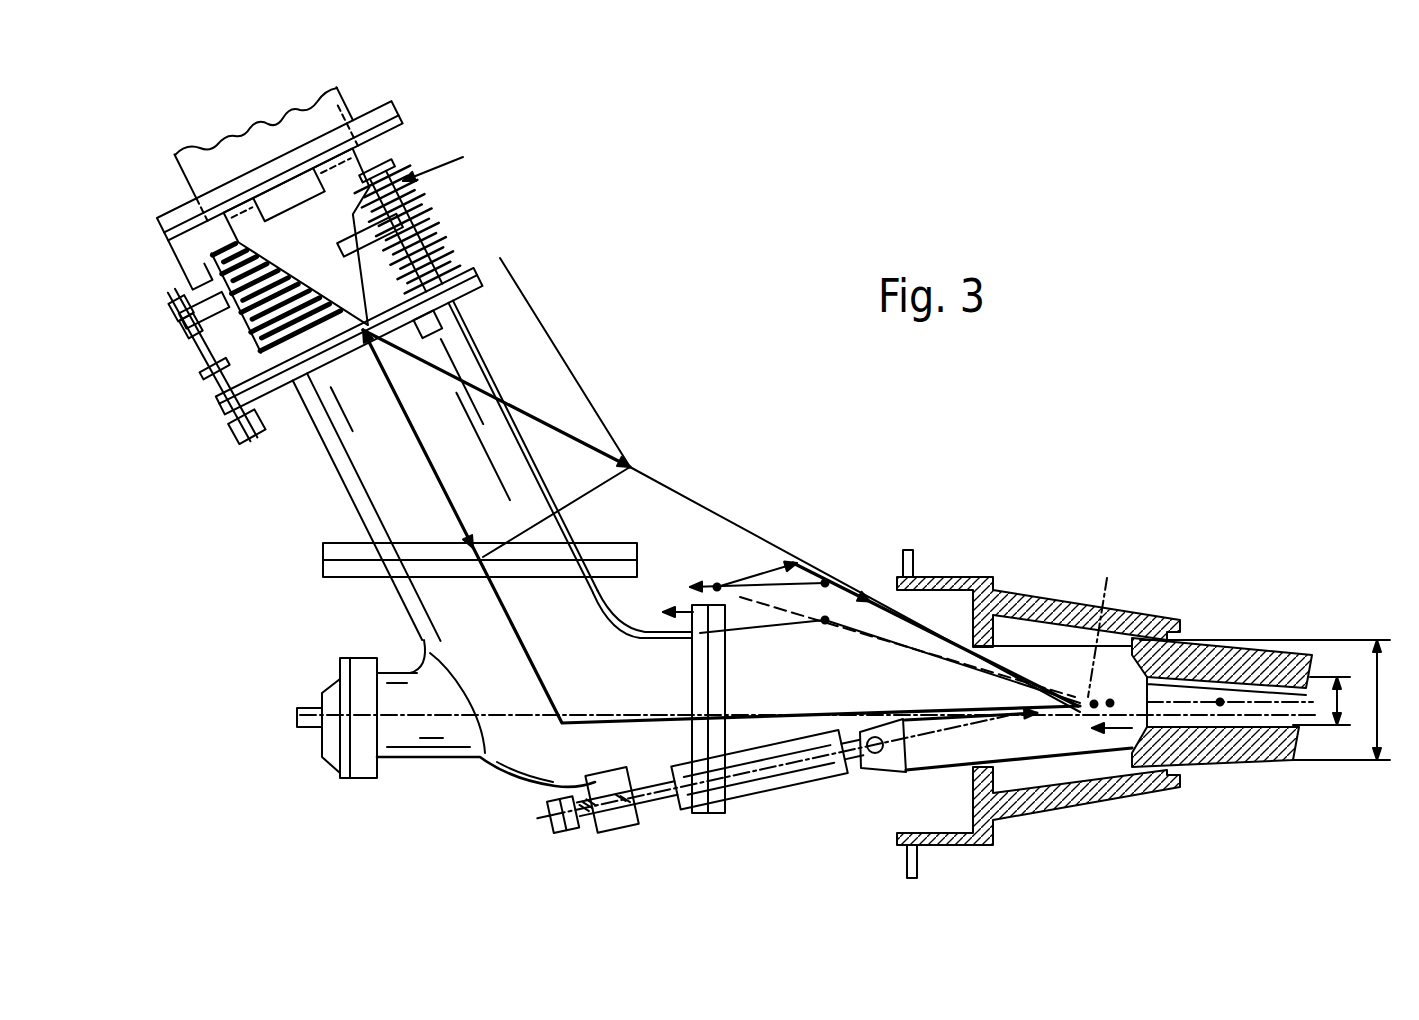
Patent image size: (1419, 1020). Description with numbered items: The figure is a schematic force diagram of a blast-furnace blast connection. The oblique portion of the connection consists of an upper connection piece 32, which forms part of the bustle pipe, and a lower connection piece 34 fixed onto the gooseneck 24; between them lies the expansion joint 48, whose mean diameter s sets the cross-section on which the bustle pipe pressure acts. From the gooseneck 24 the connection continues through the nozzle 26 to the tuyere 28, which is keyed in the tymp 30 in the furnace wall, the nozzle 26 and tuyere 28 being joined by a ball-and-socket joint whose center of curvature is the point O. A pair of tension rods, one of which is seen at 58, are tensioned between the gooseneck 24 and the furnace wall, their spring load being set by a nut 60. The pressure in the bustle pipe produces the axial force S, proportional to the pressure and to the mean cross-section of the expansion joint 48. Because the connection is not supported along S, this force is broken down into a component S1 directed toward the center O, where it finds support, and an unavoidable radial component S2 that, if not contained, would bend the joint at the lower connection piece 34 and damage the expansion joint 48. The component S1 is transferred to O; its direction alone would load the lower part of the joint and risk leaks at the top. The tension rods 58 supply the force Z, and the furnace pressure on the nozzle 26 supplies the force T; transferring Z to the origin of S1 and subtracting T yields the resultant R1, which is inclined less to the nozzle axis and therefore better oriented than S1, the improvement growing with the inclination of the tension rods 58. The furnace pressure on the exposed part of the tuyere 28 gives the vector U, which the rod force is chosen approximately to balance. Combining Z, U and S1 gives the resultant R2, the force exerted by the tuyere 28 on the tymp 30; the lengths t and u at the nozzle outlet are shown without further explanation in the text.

The gooseneck 24 is at (503, 772).
The nozzle 26 is at (935, 767).
The tuyere 28 is at (1237, 750).
The tymp 30 is at (1127, 783).
The upper connection piece 32 is at (397, 106).
The lower connection piece 34 is at (322, 440).
The expansion joint 48 is at (420, 238).
The tension rod 58 is at (780, 776).
The nut 60 is at (577, 817).
The force caused by bustle pipe pressure S is at (413, 430).
The component S1 is at (522, 410).
The component S2 is at (500, 258).
The resultant R1 is at (826, 624).
The resultant R2 is at (850, 591).
The force resulting from the tension rods Z is at (720, 584).
The force of furnace pressure on the nozzle T is at (692, 647).
The force of furnace pressure on the tuyere U is at (772, 586).
The center of curvature of the ball-and-socket joint O is at (1104, 625).
The mean diameter of the expansion joint s is at (428, 176).
The displacement t is at (1337, 677).
The displacement u is at (1377, 640).